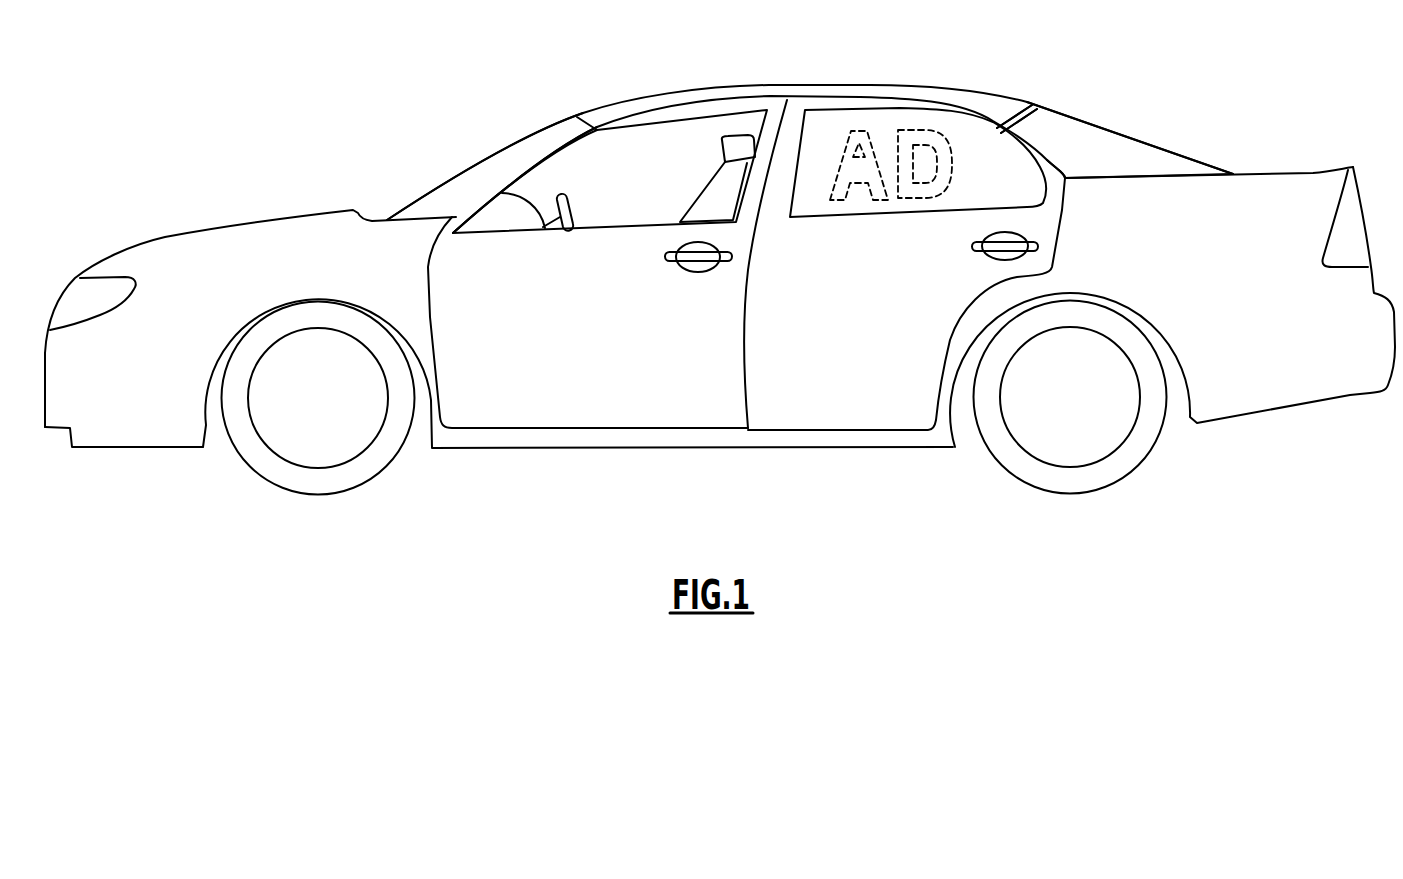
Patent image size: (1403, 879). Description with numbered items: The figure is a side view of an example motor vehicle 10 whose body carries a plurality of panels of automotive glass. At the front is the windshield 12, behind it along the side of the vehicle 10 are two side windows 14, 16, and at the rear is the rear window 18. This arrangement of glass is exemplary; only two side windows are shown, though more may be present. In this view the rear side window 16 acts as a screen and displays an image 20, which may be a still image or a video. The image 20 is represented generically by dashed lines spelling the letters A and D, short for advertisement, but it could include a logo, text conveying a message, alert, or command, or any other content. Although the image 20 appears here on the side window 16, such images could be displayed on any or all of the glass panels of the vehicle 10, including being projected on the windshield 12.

The motor vehicle 10 is at (476, 137).
The windshield 12 is at (532, 147).
The side window 14 is at (675, 130).
The side window 16 is at (837, 123).
The rear window 18 is at (1082, 137).
The image 20 is at (877, 138).